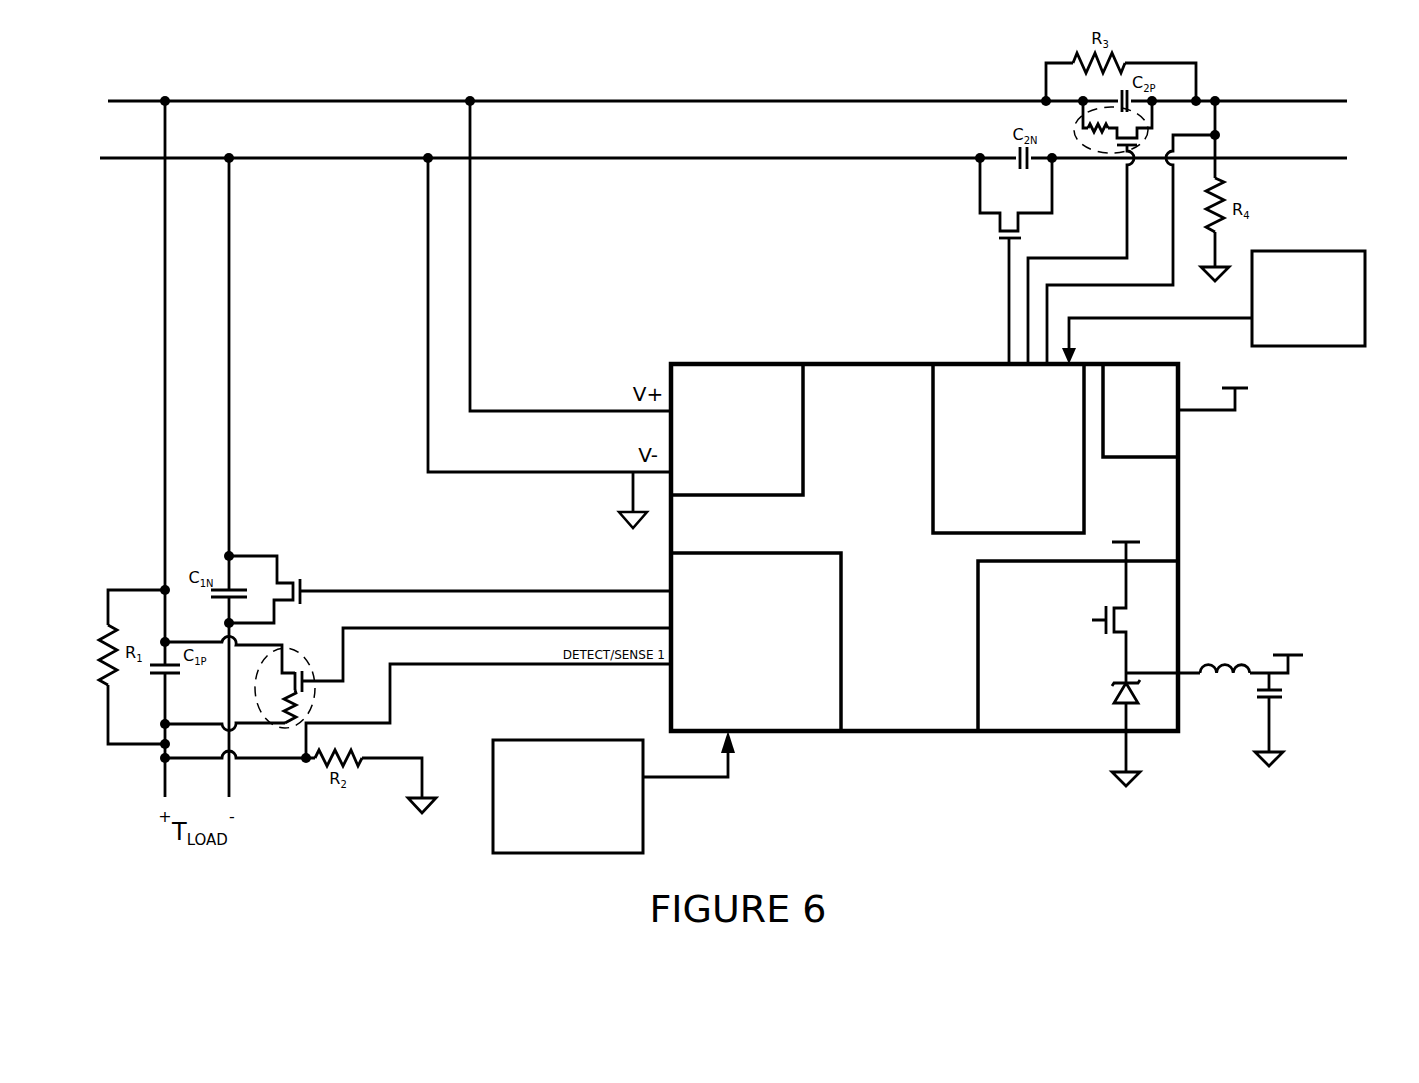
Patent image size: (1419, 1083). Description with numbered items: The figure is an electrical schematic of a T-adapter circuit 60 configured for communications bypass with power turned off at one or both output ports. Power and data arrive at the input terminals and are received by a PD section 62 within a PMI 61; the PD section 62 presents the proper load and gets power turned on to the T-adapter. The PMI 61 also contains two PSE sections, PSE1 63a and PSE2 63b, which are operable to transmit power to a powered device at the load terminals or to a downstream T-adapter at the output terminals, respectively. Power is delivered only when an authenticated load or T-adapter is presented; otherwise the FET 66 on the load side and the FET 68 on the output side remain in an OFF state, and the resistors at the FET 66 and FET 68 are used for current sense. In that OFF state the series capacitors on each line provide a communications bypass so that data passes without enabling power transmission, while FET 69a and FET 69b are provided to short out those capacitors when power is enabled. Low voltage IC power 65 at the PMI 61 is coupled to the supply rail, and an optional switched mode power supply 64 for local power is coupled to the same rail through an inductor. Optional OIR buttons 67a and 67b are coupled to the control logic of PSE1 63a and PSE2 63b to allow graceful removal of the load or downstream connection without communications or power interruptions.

The T-adapter circuit 60 is at (582, 68).
The PMI 61 is at (905, 735).
The PD section 62 is at (803, 400).
The PSE1 section 63a is at (841, 580).
The PSE2 section 63b is at (933, 484).
The optional switched mode power supply (SMPS) 64 is at (978, 668).
The low voltage (LV) IC power 65 is at (1158, 458).
The FET 66 is at (303, 649).
The OIR button 67a is at (550, 740).
The OIR button 67b is at (1310, 251).
The FET 68 is at (1110, 164).
The FET 69a is at (292, 578).
The FET 69b is at (996, 234).